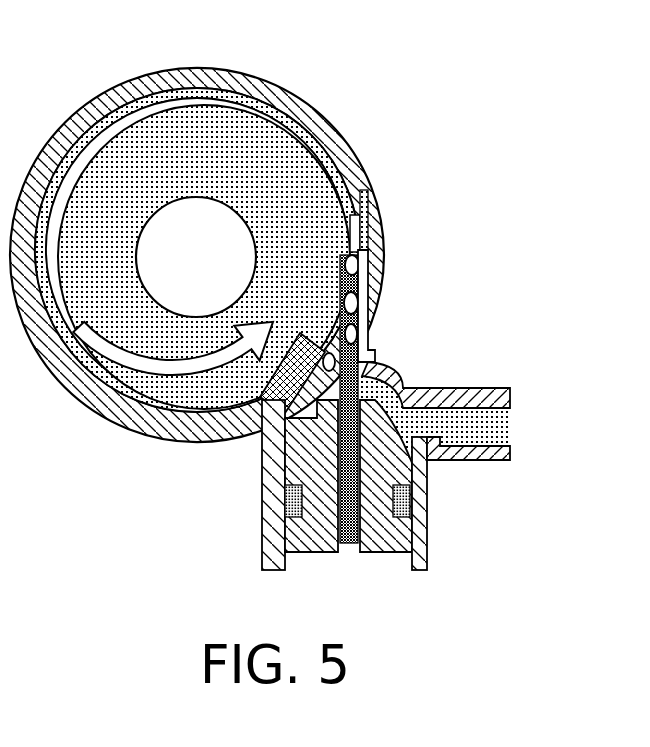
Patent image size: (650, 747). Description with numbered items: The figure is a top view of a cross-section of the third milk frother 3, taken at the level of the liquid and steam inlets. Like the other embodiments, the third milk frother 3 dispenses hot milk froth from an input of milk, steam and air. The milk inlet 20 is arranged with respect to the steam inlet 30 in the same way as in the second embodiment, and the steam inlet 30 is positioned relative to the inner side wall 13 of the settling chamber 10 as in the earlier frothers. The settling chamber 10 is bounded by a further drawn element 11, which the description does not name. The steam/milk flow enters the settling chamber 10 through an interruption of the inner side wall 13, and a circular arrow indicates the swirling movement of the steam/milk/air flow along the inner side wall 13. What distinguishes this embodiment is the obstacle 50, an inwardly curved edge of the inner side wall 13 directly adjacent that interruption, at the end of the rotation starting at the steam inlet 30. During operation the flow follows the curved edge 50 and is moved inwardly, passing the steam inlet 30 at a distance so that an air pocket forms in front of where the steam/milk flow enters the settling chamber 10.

The third milk frother 3 is at (470, 200).
The settling chamber 10 is at (213, 138).
The elastic layer 11 is at (255, 147).
The inner side wall 13 is at (97, 363).
The milk inlet 20 is at (480, 425).
The steam inlet 30 is at (378, 353).
The obstacle 50 is at (312, 336).